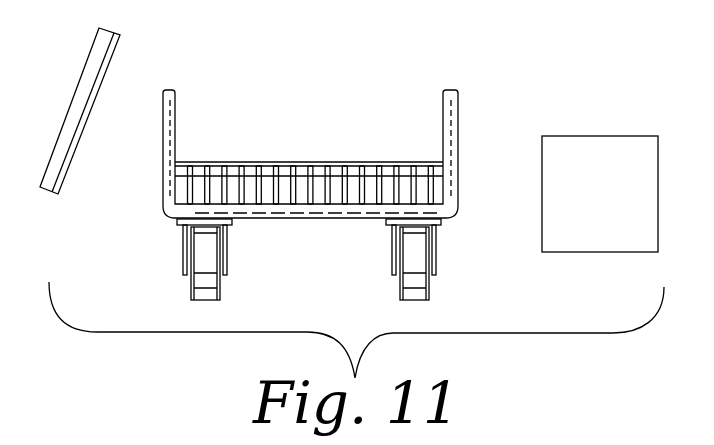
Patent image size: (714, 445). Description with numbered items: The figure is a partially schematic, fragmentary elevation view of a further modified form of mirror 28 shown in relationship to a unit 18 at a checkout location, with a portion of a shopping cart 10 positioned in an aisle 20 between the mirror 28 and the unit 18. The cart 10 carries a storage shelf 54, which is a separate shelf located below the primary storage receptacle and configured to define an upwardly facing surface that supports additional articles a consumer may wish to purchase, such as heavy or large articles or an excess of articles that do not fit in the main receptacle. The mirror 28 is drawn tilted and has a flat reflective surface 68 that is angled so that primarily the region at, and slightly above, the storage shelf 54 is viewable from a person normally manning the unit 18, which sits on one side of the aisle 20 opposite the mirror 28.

The mirror 28 is at (116, 58).
The flat reflective surface 68 is at (72, 170).
The cart 10 is at (363, 128).
The storage shelf 54 is at (282, 152).
The aisle 20 is at (456, 246).
The unit 18 is at (583, 218).